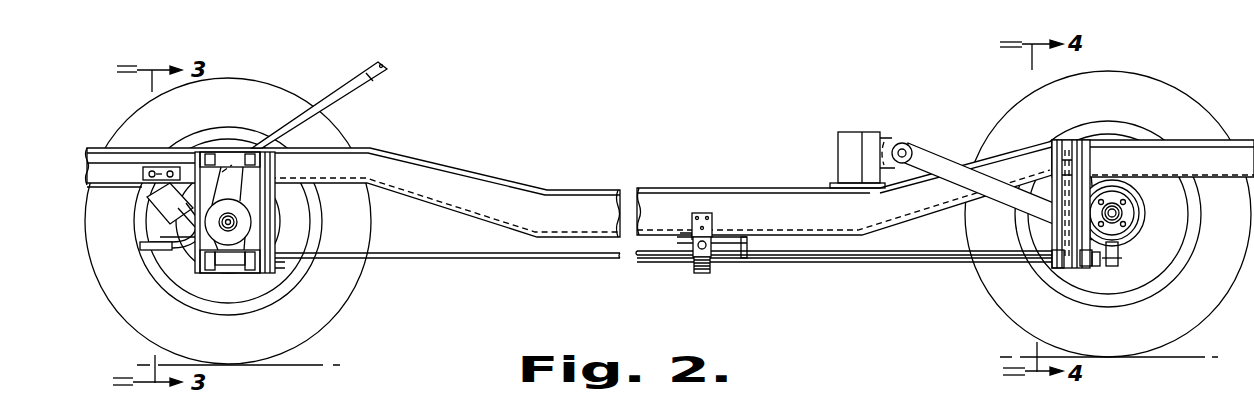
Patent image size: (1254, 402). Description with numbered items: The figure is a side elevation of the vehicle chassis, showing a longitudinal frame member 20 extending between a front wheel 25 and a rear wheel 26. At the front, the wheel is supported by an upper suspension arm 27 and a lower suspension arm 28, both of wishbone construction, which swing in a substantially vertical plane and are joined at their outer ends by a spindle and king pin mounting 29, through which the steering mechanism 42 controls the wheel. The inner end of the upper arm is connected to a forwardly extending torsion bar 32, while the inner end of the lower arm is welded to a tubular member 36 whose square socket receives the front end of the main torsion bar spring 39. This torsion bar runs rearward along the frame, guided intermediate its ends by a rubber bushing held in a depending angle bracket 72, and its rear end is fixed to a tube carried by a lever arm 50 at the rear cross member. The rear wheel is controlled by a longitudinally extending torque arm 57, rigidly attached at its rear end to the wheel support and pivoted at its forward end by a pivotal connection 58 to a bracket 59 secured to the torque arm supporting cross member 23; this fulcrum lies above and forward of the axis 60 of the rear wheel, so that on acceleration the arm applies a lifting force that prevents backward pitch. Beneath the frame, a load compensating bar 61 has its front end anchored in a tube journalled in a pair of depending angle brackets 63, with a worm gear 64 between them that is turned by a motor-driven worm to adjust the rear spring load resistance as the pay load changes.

The frame member 20 is at (124, 156).
The torque arm supporting cross member 23 is at (868, 132).
The front wheel 25 is at (334, 302).
The rear wheel 26 is at (1196, 314).
The upper suspension arm 27 is at (260, 160).
The lower suspension arm 28 is at (246, 276).
The spindle and king pin mounting 29 is at (234, 193).
The torsion bar 32 is at (95, 184).
The tubular member 36 is at (256, 266).
The main torsion bar spring 39 is at (480, 258).
The steering mechanism 42 is at (300, 117).
The lever arm 50 is at (1070, 270).
The torque arm 57 is at (1028, 194).
The pivotal connection 58 is at (912, 150).
The bracket 59 is at (890, 140).
The axis of the rear wheel 60 is at (1124, 213).
The load compensating bar 61 is at (803, 263).
The angle bracket 63 is at (687, 241).
The worm gear 64 is at (702, 273).
The angle bracket 72 is at (743, 247).